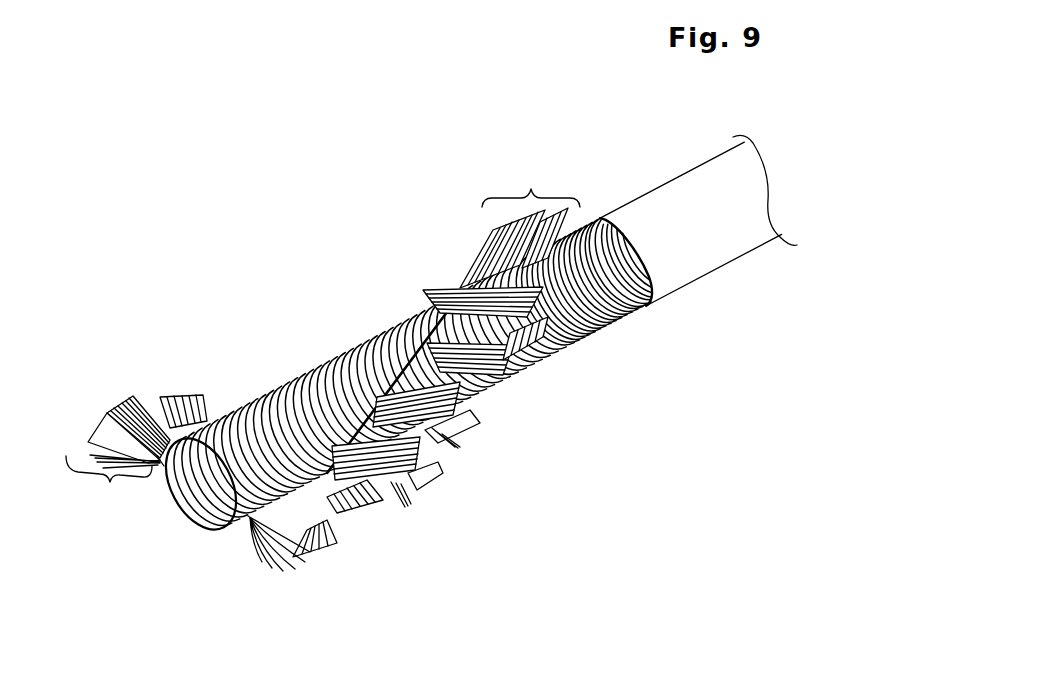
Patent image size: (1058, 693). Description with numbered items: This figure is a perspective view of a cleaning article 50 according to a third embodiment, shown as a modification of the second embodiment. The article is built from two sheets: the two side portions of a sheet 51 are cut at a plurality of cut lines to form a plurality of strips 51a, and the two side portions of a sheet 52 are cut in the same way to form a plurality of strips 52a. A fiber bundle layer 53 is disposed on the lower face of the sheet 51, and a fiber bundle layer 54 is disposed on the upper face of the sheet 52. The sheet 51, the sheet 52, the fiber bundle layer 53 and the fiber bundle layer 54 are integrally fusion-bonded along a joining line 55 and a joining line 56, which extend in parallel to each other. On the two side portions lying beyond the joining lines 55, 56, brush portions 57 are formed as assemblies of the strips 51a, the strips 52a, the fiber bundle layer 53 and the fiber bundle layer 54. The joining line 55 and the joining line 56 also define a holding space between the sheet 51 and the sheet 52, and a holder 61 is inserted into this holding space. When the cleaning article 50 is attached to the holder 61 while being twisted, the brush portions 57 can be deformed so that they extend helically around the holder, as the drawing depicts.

The cleaning article 50 is at (398, 258).
The sheet 51 is at (200, 528).
The strips 51a is at (90, 441).
The sheet 52 is at (221, 432).
The strips 52a is at (177, 398).
The fiber bundle layer 53 is at (250, 540).
The fiber bundle layer 54 is at (372, 338).
The joining line 55 is at (160, 461).
The joining line 56 is at (253, 524).
The brush portions 57 is at (323, 337).
The holder 61 is at (720, 240).